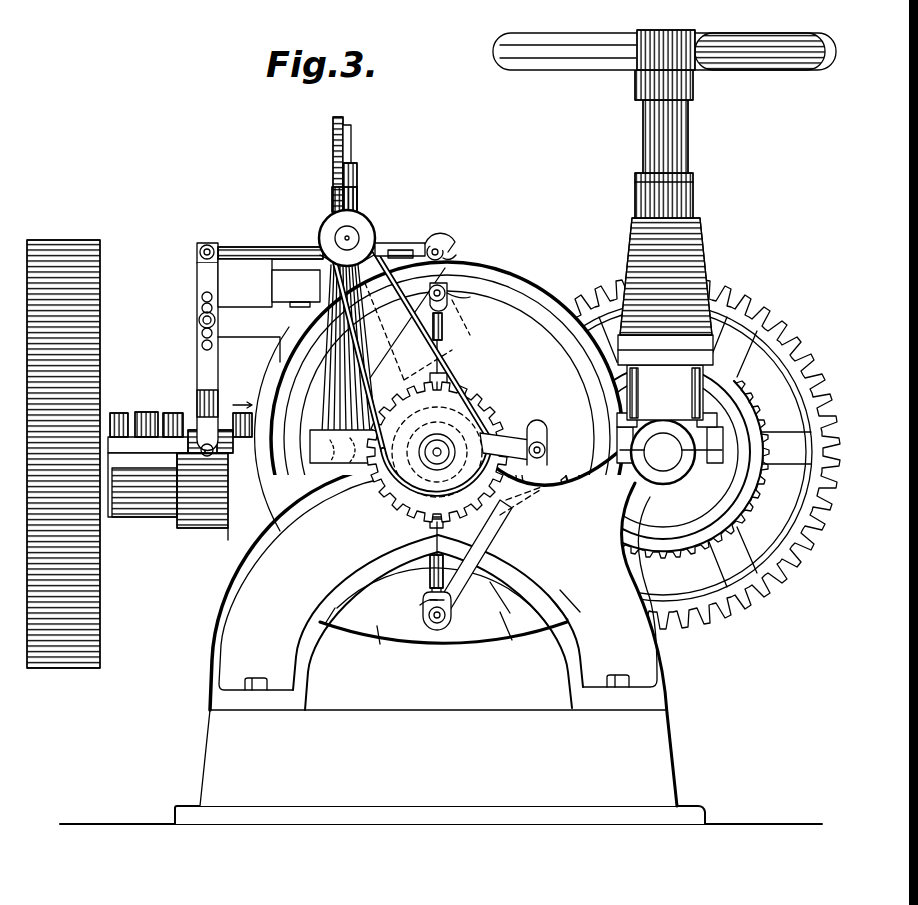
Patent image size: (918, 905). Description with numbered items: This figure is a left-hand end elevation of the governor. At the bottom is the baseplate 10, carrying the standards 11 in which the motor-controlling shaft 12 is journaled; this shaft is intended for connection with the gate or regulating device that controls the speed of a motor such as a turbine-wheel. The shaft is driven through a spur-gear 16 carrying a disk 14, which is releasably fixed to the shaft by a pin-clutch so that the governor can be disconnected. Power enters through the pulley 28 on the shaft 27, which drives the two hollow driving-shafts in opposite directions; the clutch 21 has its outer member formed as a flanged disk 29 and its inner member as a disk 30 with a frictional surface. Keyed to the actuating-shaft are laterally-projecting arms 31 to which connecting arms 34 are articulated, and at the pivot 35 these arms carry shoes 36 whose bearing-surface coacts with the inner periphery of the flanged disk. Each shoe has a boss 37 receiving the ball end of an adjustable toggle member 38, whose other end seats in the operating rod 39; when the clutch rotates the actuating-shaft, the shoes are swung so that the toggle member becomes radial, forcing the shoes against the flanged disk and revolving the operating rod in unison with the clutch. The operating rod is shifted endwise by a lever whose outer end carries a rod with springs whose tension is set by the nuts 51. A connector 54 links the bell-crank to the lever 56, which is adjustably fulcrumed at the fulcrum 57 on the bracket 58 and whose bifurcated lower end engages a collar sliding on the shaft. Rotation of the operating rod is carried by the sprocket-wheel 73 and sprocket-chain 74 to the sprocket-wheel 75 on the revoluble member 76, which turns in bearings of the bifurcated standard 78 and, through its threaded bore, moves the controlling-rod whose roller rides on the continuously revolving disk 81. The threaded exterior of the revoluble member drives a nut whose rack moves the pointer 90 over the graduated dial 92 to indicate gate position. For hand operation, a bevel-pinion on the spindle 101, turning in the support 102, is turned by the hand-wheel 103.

The baseplate 10 is at (665, 770).
The standards 11 is at (655, 665).
The motor-controlling shaft 12 is at (670, 448).
The disk 14 is at (762, 577).
The spur-gear 16 is at (775, 323).
The clutch 21 is at (505, 280).
The shaft 27 is at (195, 420).
The pulley 28 is at (92, 318).
The flanged disk 29 is at (378, 633).
The disk 30 is at (512, 618).
The laterally-projecting arms 31 is at (500, 438).
The connecting arms 34 is at (412, 360).
The pivot 35 is at (442, 289).
The shoes 36 is at (458, 296).
The boss 37 is at (430, 612).
The adjustable toggle member 38 is at (443, 323).
The operating rod 39 is at (430, 456).
The nuts 51 is at (454, 254).
The connector 54 is at (252, 242).
The lever 56 is at (200, 283).
The fulcrum 57 is at (200, 320).
The bracket 58 is at (242, 333).
The sprocket-wheel 73 is at (466, 488).
The sprocket-chain 74 is at (456, 375).
The sprocket-wheel 75 is at (320, 236).
The revoluble member 76 is at (350, 236).
The bifurcated standard 78 is at (345, 380).
The revoluble disk 81 is at (432, 245).
The pointer 90 is at (351, 148).
The dial 92 is at (337, 138).
The spindle 101 is at (684, 135).
The support 102 is at (700, 245).
The hand-wheel 103 is at (574, 45).